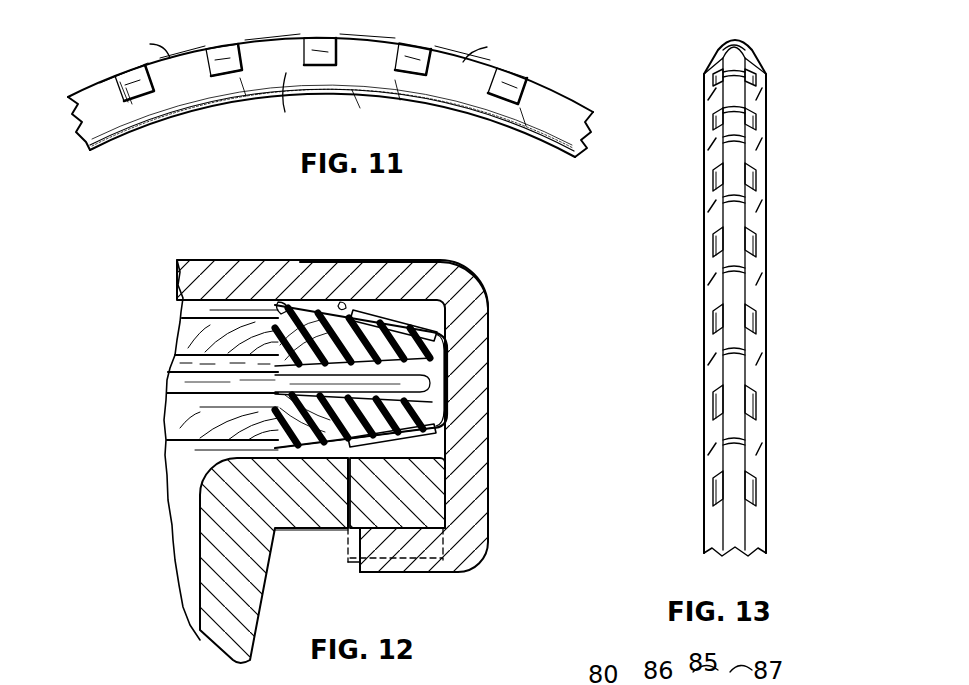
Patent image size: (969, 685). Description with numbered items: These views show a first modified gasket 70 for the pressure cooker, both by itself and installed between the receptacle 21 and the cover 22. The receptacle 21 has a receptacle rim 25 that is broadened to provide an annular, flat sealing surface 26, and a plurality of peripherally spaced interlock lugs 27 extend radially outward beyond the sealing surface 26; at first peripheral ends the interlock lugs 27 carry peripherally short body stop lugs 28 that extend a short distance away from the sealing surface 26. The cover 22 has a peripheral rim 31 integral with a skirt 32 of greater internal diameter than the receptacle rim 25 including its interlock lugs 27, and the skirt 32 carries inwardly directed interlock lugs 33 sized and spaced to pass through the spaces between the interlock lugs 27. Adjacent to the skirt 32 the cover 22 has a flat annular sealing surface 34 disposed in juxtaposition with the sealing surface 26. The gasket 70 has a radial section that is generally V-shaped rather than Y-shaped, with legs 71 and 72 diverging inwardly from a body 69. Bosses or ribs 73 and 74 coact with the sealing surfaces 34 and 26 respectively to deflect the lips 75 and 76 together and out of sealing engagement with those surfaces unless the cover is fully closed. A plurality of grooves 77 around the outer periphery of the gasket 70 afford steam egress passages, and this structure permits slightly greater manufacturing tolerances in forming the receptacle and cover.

In FIG. 12, the receptacle 21 is at (200, 638).
In FIG. 12, the cover 22 is at (197, 258).
In FIG. 12, the receptacle rim 25 is at (210, 487).
In FIG. 12, the sealing surface 26 is at (323, 458).
In FIG. 12, the interlock lugs 27 is at (420, 505).
In FIG. 12, the body stop lugs 28 is at (352, 563).
In FIG. 12, the peripheral rim 31 is at (472, 277).
In FIG. 12, the skirt 32 is at (483, 427).
In FIG. 12, the interlock lugs 33 is at (403, 573).
In FIG. 12, the sealing surface 34 is at (345, 306).
In FIG. 12, the body 69 is at (432, 367).
In FIG. 11, the gasket 70 is at (543, 76).
In FIG. 12, the gasket 70 is at (143, 400).
In FIG. 13, the gasket 70 is at (787, 110).
In FIG. 11, the leg 71 is at (309, 83).
In FIG. 12, the leg 71 is at (317, 310).
In FIG. 13, the leg 71 is at (713, 286).
In FIG. 12, the leg 72 is at (337, 452).
In FIG. 13, the leg 72 is at (753, 286).
In FIG. 11, the boss 73 is at (227, 72).
In FIG. 12, the boss 73 is at (397, 317).
In FIG. 13, the boss 73 is at (713, 182).
In FIG. 12, the boss 74 is at (405, 440).
In FIG. 13, the boss 74 is at (755, 182).
In FIG. 11, the lip 75 is at (363, 92).
In FIG. 12, the lip 75 is at (285, 300).
In FIG. 13, the lip 75 is at (707, 213).
In FIG. 12, the lip 76 is at (283, 457).
In FIG. 13, the lip 76 is at (765, 213).
In FIG. 12, the grooves 77 is at (434, 379).
In FIG. 13, the grooves 77 is at (730, 273).